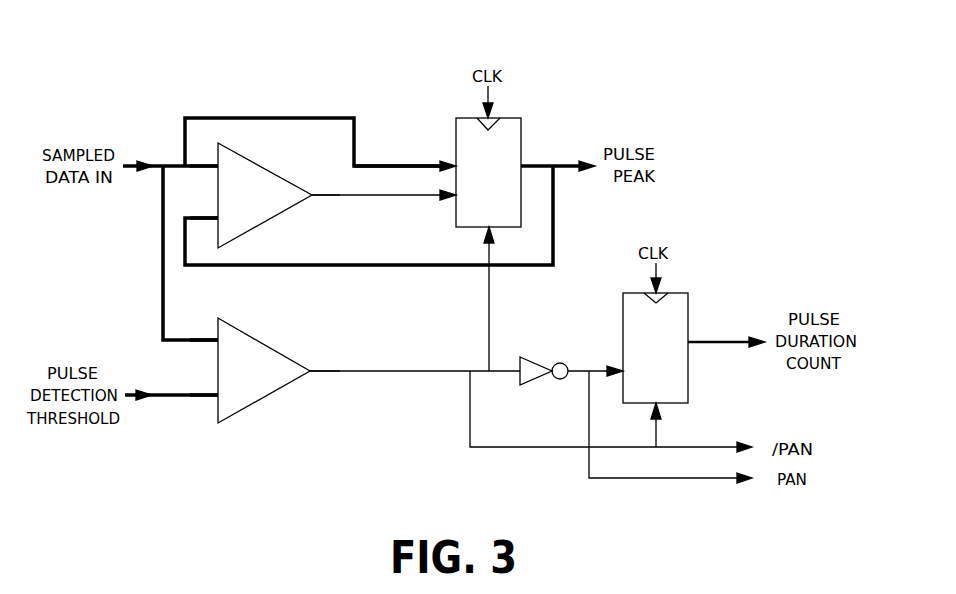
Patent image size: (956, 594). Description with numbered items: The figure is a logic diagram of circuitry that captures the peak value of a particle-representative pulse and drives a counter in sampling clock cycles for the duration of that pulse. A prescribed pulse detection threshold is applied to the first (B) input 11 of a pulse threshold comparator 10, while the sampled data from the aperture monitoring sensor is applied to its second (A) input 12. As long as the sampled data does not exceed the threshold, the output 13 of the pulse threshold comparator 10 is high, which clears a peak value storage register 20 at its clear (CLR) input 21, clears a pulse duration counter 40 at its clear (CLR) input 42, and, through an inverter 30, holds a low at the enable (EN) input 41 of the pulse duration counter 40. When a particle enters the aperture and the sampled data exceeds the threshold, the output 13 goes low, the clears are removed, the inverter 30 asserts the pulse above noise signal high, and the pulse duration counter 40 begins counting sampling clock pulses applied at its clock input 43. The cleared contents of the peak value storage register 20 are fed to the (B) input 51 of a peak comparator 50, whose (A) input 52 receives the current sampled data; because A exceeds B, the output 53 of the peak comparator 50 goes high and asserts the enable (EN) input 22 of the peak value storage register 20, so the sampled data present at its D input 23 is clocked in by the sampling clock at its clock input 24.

The pulse threshold comparator 10 is at (262, 342).
The first (B) input 11 is at (216, 398).
The second (A) input 12 is at (217, 335).
The output 13 is at (312, 373).
The peak value storage register 20 is at (521, 135).
The clear (CLR) input 21 is at (496, 229).
The enable (EN) input 22 is at (456, 200).
The D input 23 is at (456, 160).
The clock input 24 is at (493, 118).
The inverter 30 is at (536, 357).
The pulse duration counter 40 is at (688, 310).
The enable (EN) input 41 is at (623, 367).
The clear (CLR) input 42 is at (660, 405).
The clock input 43 is at (650, 293).
The peak comparator 50 is at (263, 167).
The (B) input 51 is at (217, 216).
The (A) input 52 is at (217, 160).
The output 53 is at (312, 197).